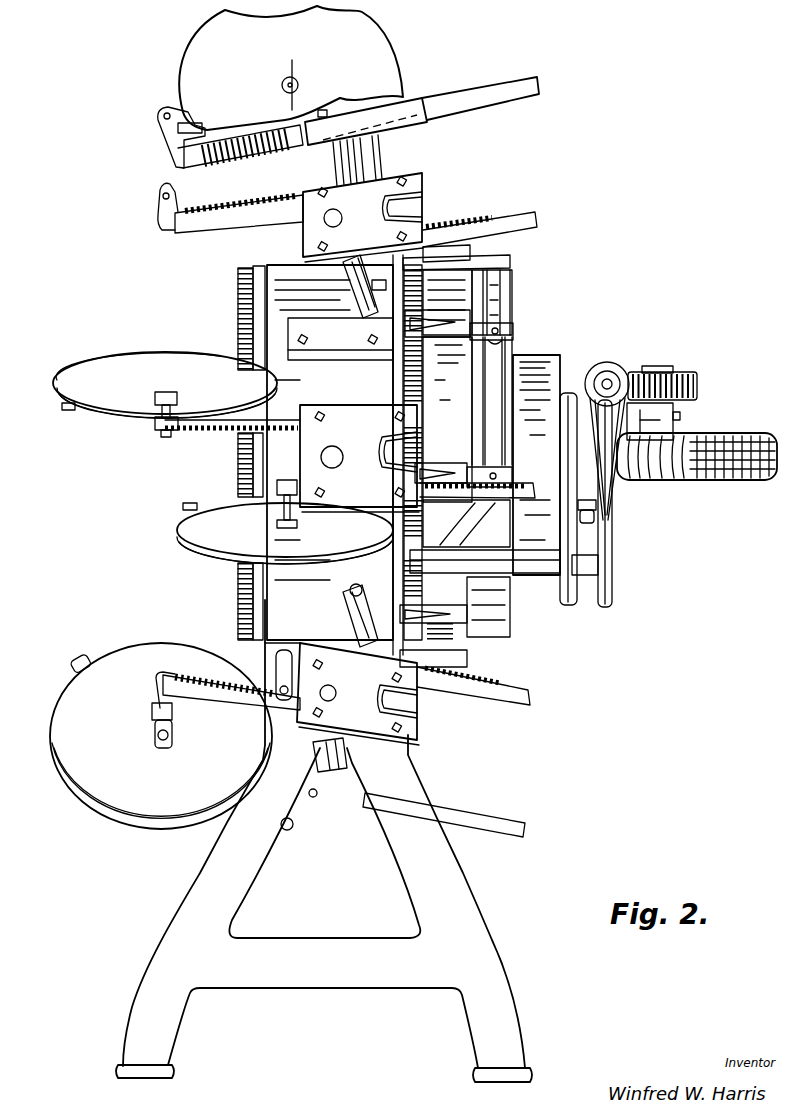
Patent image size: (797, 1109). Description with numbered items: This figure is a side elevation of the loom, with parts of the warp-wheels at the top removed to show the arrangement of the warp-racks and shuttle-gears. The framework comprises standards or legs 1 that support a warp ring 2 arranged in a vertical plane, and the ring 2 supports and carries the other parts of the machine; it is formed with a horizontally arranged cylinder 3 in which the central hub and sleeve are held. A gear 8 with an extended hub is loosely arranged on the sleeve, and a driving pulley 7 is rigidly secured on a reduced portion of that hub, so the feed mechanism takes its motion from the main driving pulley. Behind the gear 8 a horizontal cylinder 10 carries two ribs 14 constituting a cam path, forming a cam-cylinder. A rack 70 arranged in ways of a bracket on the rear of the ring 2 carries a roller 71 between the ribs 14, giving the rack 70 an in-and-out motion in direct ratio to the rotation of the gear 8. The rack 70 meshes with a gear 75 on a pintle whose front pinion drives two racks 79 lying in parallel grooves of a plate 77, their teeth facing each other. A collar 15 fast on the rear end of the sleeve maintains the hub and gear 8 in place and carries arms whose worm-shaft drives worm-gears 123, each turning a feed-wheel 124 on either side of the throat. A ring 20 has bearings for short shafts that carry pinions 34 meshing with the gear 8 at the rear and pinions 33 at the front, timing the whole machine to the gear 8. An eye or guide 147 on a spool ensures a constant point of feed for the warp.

The standards or legs 1 is at (494, 958).
The warp ring 2 is at (287, 298).
The horizontally arranged cylinder 3 is at (288, 280).
The driving pulley 7 is at (543, 390).
The gear 8 is at (420, 364).
The horizontal cylinder 10 is at (510, 620).
The ribs 14 is at (512, 312).
The collar 15 is at (585, 467).
The ring 20 is at (258, 270).
The pinion 33 is at (237, 277).
The pinion 34 is at (430, 296).
The rack 70 is at (510, 470).
The roller 71 is at (505, 258).
The gear 75 is at (362, 600).
The plate 77 is at (417, 703).
The rack 79 is at (530, 693).
The worm-gear 123 is at (697, 390).
The feed-wheel 124 is at (653, 487).
The eye or guide 147 is at (82, 657).